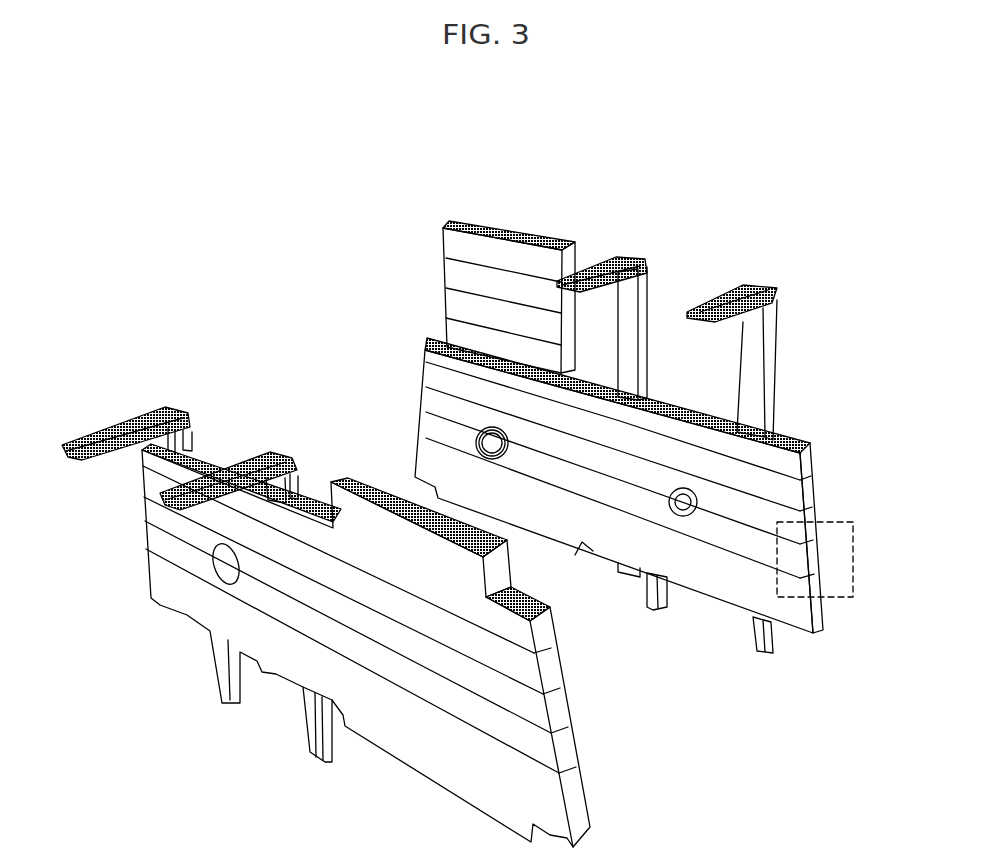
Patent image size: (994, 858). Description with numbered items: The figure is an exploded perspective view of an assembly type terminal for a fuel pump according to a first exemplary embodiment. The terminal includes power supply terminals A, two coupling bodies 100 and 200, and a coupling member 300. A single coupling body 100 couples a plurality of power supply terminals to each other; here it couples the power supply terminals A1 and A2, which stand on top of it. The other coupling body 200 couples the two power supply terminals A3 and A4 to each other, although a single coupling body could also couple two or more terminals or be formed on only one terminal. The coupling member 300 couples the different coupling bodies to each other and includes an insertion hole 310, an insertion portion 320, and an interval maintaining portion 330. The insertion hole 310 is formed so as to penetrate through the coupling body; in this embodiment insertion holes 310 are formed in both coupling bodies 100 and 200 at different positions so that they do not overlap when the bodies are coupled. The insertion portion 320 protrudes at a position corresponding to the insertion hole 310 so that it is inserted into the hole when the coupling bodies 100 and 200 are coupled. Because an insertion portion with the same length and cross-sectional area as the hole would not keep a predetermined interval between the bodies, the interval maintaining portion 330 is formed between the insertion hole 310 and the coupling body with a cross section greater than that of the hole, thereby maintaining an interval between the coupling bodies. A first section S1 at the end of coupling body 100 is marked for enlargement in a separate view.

The coupling body 100 is at (422, 348).
The coupling body 200 is at (360, 492).
The coupling member 300 is at (435, 620).
The insertion hole 310 is at (222, 572).
The insertion portion 320 is at (485, 455).
The interval maintaining portion 330 is at (510, 458).
The power supply terminals A is at (419, 298).
The power supply terminal A1 is at (613, 256).
The power supply terminal A2 is at (723, 302).
The power supply terminal A3 is at (128, 418).
The power supply terminal A4 is at (222, 472).
The first section S1 is at (830, 522).